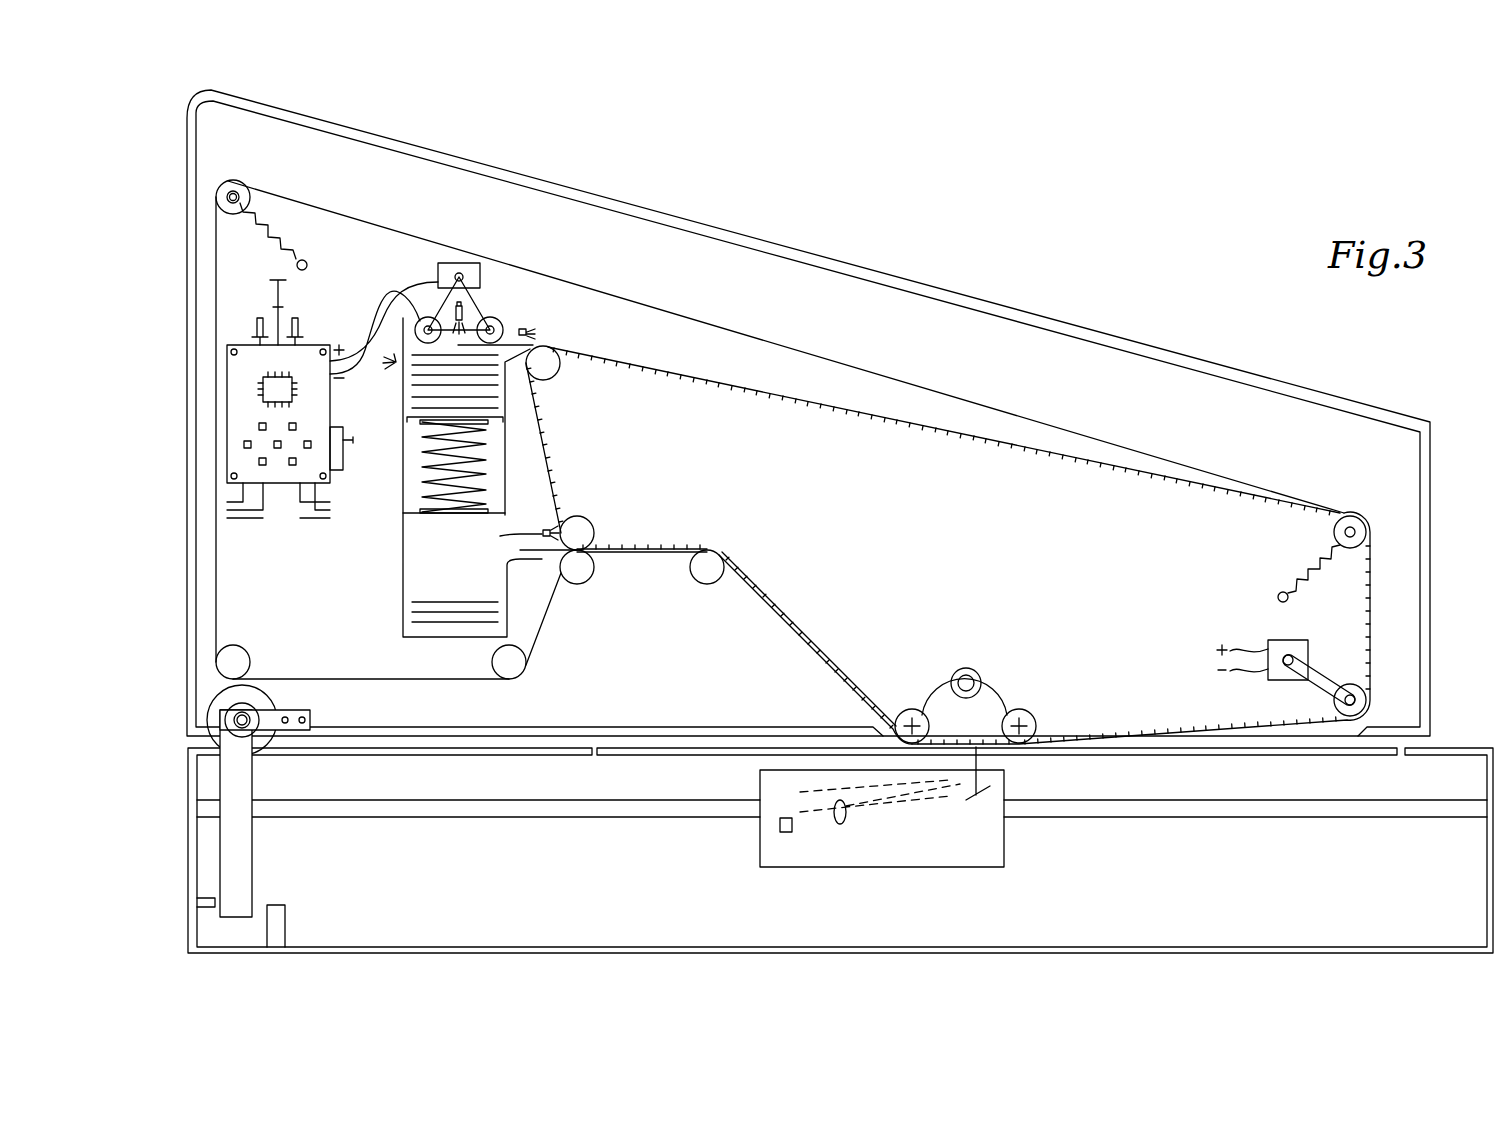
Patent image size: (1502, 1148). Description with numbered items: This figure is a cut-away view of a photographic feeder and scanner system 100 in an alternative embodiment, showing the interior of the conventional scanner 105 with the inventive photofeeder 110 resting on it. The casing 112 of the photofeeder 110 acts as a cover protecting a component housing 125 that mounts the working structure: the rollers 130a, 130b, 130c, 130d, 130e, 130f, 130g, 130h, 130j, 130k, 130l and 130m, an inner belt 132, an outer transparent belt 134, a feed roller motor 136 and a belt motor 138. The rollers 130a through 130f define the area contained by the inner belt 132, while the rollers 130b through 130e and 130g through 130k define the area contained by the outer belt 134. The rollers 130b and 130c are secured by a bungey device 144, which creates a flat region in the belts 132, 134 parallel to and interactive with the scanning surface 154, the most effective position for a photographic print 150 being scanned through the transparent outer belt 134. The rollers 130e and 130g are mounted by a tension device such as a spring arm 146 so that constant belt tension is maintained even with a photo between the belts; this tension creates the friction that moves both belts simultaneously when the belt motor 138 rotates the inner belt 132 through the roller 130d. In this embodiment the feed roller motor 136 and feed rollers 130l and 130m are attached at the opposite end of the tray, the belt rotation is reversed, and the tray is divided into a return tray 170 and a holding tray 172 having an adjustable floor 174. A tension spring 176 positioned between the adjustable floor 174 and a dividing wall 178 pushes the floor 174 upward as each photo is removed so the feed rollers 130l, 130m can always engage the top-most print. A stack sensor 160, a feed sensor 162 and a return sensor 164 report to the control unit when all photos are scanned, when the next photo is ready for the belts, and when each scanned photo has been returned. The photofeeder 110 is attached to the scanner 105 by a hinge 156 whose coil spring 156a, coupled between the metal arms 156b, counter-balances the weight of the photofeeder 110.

The system 100 is at (1155, 191).
The scanner 105 is at (1457, 748).
The photofeeder 110 is at (1117, 292).
The casing 112 is at (750, 235).
The component housing 125 is at (303, 588).
The roller 130a is at (585, 518).
The roller 130b is at (911, 718).
The roller 130c is at (1030, 722).
The roller 130d is at (1355, 690).
The roller 130e is at (1335, 527).
The roller 130f is at (563, 372).
The roller 130g is at (229, 186).
The roller 130h is at (250, 660).
The roller 130j is at (582, 582).
The roller 130k is at (705, 585).
The feed roller 130l is at (489, 323).
The feed roller 130m is at (398, 288).
The inner belt 132 is at (655, 366).
The outer transparent belt 134 is at (460, 375).
The feed roller motor 136 is at (447, 263).
The belt motor 138 is at (1275, 641).
The bungey device 144 is at (980, 648).
The spring arm 146 is at (290, 250).
The photographic print 150 is at (495, 397).
The scanning surface 154 is at (1128, 756).
The hinge 156 is at (245, 780).
The coil spring 156a is at (206, 706).
The metal arms 156b is at (312, 716).
The stack sensor 160 is at (462, 308).
The feed sensor 162 is at (535, 328).
The return sensor 164 is at (503, 536).
The return tray 170 is at (457, 477).
The holding tray 172 is at (412, 398).
The adjustable floor 174 is at (408, 420).
The tension spring 176 is at (490, 488).
The dividing wall 178 is at (425, 517).